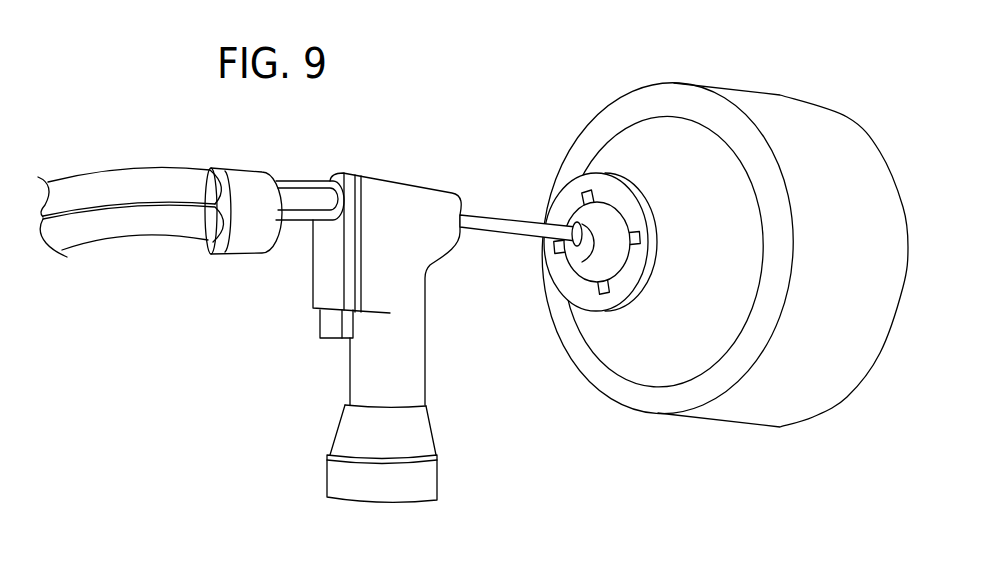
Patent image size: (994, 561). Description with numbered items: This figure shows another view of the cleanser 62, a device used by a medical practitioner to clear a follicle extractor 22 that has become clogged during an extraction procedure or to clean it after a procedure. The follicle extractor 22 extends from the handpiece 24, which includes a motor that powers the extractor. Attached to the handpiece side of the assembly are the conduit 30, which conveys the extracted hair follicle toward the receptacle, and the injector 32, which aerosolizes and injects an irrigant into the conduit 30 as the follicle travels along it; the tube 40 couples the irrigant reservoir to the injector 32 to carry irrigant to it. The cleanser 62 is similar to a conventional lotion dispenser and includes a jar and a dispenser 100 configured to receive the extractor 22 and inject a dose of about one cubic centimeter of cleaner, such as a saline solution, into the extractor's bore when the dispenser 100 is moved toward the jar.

The follicle extractor 22 is at (515, 220).
The handpiece 24 is at (412, 350).
The conduit 30 is at (167, 181).
The injector 32 is at (250, 177).
The tube 40 is at (167, 232).
The cleanser 62 is at (556, 92).
The dispenser 100 is at (573, 198).